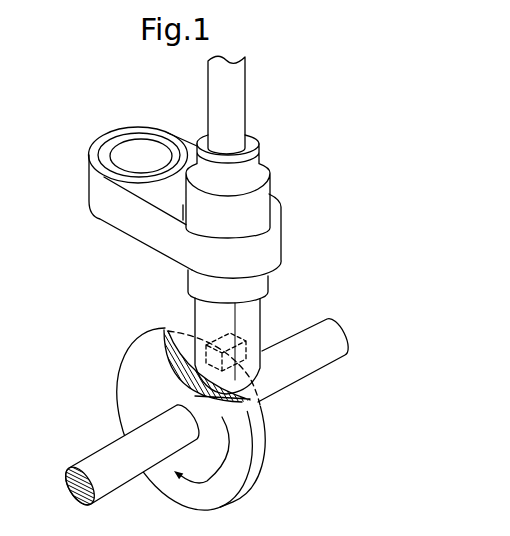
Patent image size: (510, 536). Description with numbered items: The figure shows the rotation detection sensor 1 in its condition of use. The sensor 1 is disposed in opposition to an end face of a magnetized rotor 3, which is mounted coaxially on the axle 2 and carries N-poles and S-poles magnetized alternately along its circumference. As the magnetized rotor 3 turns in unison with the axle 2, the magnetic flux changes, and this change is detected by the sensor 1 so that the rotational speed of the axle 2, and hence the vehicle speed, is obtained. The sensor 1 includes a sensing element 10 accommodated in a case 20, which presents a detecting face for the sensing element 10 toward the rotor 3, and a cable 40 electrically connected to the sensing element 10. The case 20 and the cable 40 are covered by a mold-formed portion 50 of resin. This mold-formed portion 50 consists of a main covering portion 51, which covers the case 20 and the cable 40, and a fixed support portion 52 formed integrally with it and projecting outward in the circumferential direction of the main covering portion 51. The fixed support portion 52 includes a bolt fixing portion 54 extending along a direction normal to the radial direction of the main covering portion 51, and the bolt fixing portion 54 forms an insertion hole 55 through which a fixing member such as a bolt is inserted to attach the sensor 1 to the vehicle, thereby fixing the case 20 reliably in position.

The rotation detection sensor 1 is at (239, 243).
The axle 2 is at (97, 458).
The magnetized rotor 3 is at (127, 357).
The sensing element 10 is at (244, 358).
The case 20 is at (266, 296).
The cable 40 is at (208, 86).
The mold-formed portion 50 is at (202, 185).
The main covering portion 51 is at (263, 167).
The fixed support portion 52 is at (143, 236).
The bolt fixing portion 54 is at (110, 138).
The insertion hole 55 is at (139, 150).